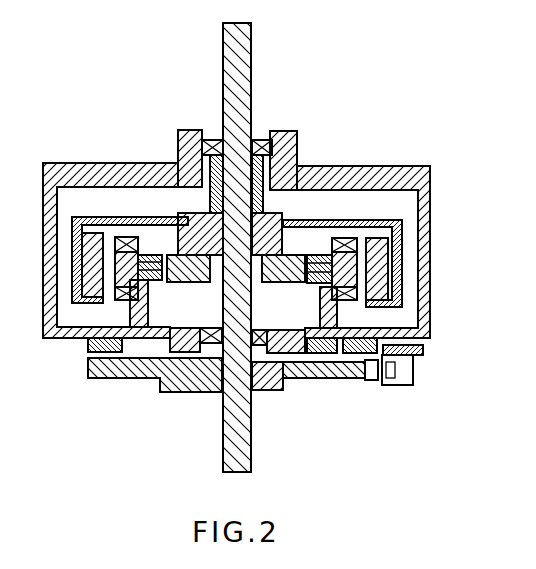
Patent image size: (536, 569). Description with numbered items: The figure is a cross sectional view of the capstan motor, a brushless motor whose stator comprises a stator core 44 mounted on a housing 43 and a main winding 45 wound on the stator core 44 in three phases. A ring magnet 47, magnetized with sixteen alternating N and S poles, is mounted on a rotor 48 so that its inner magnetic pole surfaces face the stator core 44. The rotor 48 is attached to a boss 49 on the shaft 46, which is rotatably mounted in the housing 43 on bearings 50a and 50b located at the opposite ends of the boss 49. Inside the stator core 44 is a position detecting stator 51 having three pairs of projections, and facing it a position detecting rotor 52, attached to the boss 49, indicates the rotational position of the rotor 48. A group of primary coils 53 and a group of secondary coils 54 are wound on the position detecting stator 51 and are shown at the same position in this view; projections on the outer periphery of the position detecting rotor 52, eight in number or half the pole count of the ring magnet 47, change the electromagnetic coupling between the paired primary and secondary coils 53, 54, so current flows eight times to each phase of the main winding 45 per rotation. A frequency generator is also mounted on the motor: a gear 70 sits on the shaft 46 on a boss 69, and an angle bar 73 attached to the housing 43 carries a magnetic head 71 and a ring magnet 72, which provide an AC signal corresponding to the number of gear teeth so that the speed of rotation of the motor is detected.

The housing 43 is at (430, 190).
The stator core 44 is at (342, 250).
The main winding 45 is at (348, 300).
The shaft 46 is at (252, 98).
The ring magnet 47 is at (388, 260).
The rotor 48 is at (402, 222).
The boss 49 is at (298, 180).
The bearing 50a is at (262, 137).
The bearing 50b is at (265, 385).
The position detecting stator 51 is at (152, 280).
The position detecting rotor 52 is at (185, 276).
The primary coils 53 is at (214, 238).
The secondary coils 54 is at (235, 269).
The boss 69 is at (200, 385).
The gear 70 is at (345, 378).
The magnetic head 71 is at (414, 370).
The ring magnet 72 is at (372, 380).
The angle bar 73 is at (424, 352).